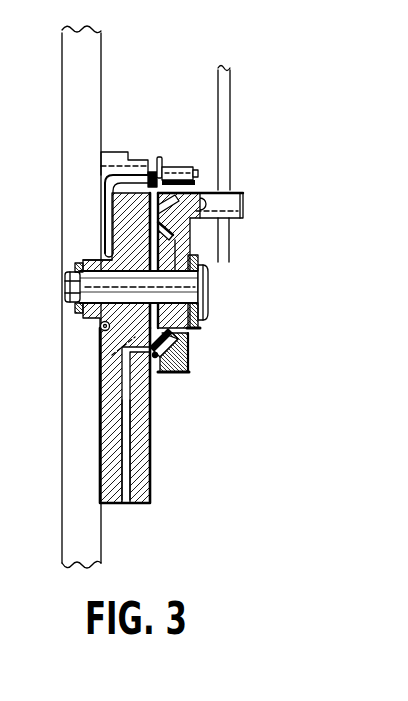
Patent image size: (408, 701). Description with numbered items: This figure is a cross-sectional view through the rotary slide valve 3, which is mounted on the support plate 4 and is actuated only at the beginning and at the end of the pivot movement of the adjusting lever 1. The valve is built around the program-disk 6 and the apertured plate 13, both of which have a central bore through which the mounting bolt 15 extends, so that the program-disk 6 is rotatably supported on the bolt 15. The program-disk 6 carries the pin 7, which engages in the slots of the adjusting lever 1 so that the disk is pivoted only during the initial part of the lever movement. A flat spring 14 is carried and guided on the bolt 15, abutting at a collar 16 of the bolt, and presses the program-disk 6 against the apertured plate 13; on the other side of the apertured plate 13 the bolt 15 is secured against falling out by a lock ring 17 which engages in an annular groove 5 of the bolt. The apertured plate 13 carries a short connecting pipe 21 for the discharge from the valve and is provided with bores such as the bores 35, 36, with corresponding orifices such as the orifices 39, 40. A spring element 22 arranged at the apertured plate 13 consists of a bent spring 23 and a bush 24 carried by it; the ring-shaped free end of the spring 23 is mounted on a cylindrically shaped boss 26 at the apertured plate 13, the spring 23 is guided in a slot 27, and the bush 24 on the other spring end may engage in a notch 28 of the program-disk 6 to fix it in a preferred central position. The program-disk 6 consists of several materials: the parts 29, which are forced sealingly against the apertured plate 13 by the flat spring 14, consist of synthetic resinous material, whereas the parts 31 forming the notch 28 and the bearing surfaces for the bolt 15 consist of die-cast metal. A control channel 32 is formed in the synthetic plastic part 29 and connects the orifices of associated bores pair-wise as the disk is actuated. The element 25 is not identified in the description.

The adjusting lever 1 is at (230, 96).
The rotary slide valve 3 is at (149, 478).
The support plate 4 is at (65, 94).
The annular groove 5 is at (63, 282).
The program-disk 6 is at (186, 358).
The pin 7 is at (237, 197).
The apertured plate 13 is at (120, 217).
The flat spring 14 is at (199, 327).
The mounting bolt 15 is at (192, 282).
The collar 16 is at (206, 306).
The lock ring 17 is at (73, 311).
The connecting pipe 21 is at (107, 458).
The spring element 22 is at (161, 126).
The bent spring 23 is at (104, 177).
The bush 24 is at (183, 167).
The O-ring 25 is at (102, 330).
The cylindrically shaped boss 26 is at (93, 259).
The slot 27 is at (116, 157).
The notch 28 is at (189, 190).
The synthetic resinous parts 29 is at (185, 372).
The die-cast metal parts 31 is at (178, 253).
The control channel 32 is at (157, 358).
The bore 35 is at (127, 455).
The bore 36 is at (112, 355).
The orifice 39 is at (102, 382).
The orifice 40 is at (178, 347).